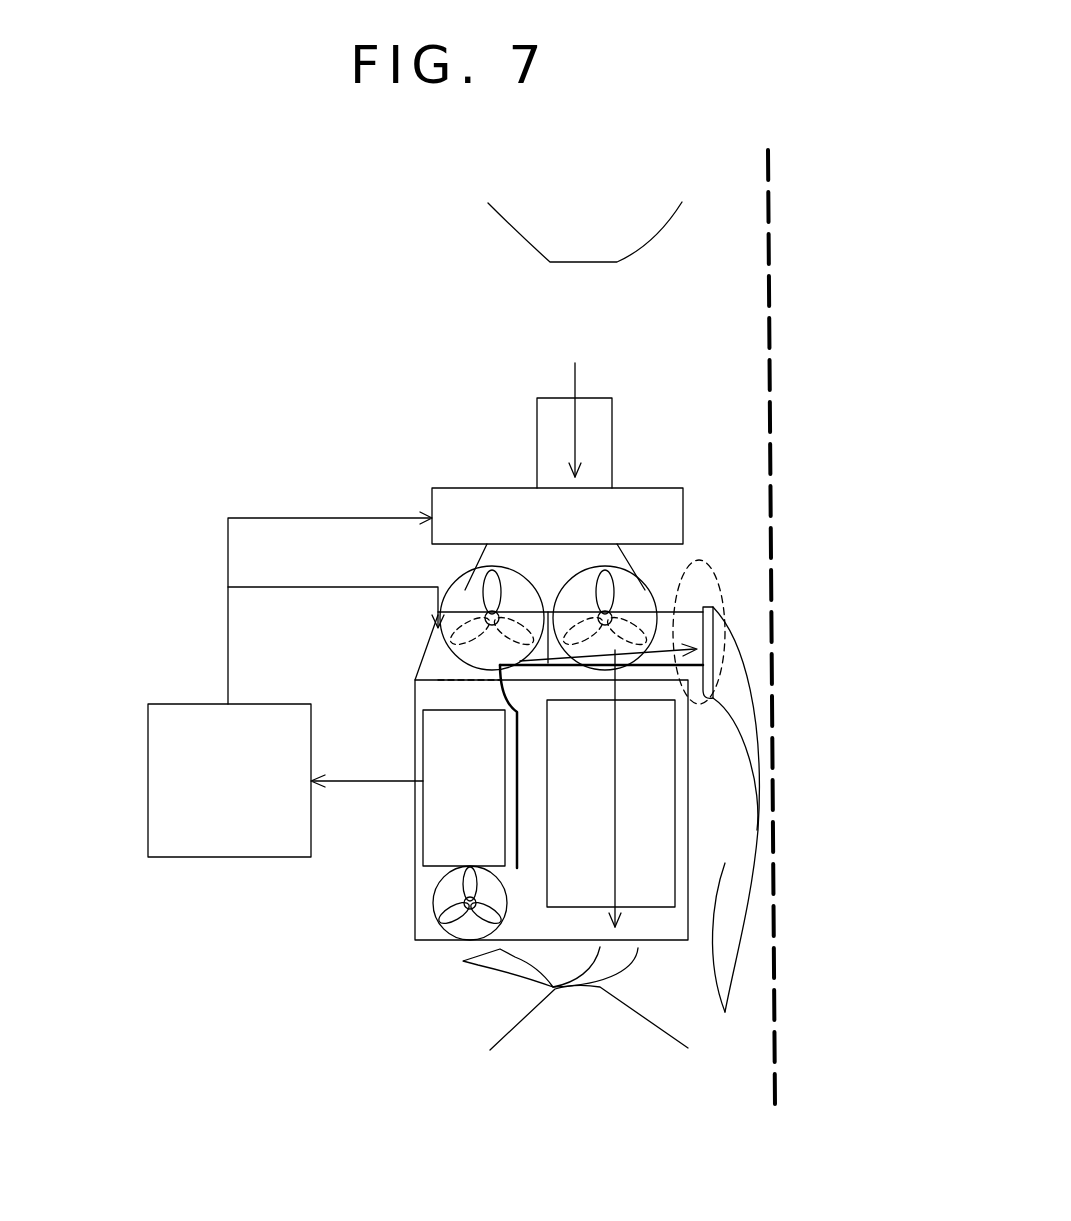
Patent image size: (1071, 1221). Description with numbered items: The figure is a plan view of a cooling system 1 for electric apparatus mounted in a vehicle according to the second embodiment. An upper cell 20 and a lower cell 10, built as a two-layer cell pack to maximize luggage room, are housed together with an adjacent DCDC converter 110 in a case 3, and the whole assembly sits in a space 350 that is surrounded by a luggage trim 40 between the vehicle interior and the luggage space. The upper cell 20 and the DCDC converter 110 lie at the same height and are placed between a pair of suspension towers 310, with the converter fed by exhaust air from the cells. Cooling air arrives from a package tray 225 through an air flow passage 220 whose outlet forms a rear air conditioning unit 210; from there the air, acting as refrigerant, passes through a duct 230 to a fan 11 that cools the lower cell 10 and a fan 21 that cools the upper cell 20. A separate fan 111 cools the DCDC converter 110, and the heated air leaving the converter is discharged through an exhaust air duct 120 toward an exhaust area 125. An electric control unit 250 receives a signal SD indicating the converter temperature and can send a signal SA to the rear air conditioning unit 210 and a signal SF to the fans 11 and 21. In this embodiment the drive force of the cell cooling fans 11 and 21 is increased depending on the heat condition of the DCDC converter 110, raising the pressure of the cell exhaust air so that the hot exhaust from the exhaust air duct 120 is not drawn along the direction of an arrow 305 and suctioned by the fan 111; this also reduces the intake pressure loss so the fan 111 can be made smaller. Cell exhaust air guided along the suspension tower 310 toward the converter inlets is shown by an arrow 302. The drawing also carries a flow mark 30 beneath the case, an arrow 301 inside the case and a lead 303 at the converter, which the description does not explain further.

The cooling system 1 is at (300, 278).
The case 3 is at (695, 872).
The lower cell 10 is at (690, 745).
The fan 11 is at (442, 592).
The upper cell 20 is at (675, 784).
The fan 21 is at (645, 585).
The air outlet flow 30 is at (668, 940).
The luggage trim 40 is at (767, 148).
The DCDC converter 110 is at (423, 722).
The fan 111 is at (433, 890).
The exhaust air duct 120 is at (430, 672).
The exhaust area 125 is at (722, 560).
The rear air conditioning unit 210 is at (478, 488).
The air flow passage 220 is at (537, 418).
The package tray 225 is at (548, 362).
The duct 230 is at (487, 568).
The electric control unit (ECU) 250 is at (148, 782).
The air passage 301 is at (615, 833).
The arrow 302 is at (633, 972).
The sensor 303 is at (503, 748).
The arrow 305 is at (742, 985).
The suspension tower 310 is at (575, 247).
The space 350 is at (468, 305).